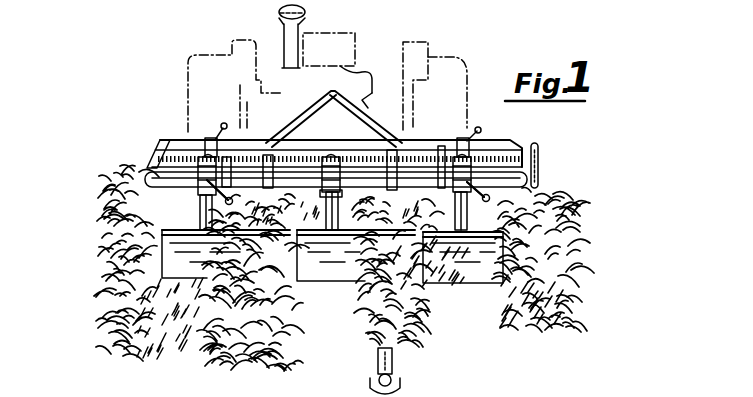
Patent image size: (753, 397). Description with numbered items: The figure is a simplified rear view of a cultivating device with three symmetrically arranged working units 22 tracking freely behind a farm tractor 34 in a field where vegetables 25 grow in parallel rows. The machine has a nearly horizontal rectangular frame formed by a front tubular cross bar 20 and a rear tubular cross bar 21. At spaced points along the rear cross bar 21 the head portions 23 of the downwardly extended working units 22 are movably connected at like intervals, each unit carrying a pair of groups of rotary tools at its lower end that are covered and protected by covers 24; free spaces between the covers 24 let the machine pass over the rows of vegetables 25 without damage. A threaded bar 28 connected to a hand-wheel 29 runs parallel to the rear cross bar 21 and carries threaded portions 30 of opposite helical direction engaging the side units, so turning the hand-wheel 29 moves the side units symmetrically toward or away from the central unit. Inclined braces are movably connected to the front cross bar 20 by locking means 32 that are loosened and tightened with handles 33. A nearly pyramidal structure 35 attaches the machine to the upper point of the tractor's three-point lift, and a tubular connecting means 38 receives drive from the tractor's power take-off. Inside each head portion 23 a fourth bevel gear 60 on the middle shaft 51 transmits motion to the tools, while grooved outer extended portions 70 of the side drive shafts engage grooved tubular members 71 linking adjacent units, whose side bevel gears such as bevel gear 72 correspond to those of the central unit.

The front tubular cross bar 20 is at (503, 143).
The rear tubular cross bar 21 is at (545, 188).
The working units 22 is at (137, 203).
The head portions 23 is at (197, 158).
The covers 24 is at (196, 270).
The rows of vegetables 25 is at (599, 283).
The threaded bar 28 is at (370, 110).
The hand-wheel 29 is at (540, 152).
The threaded portions 30 is at (262, 142).
The locking means 32 is at (213, 135).
The handles 33 is at (216, 135).
The farm tractor 34 is at (356, 68).
The pyramidal structure 35 is at (331, 95).
The tubular connecting means 38 is at (394, 362).
The middle shaft 51 is at (280, 185).
The fourth bevel gear 60 is at (338, 199).
The outer extended portions 70 is at (218, 190).
The grooved tubular member 71 is at (345, 190).
The bevel gear 72 is at (337, 200).